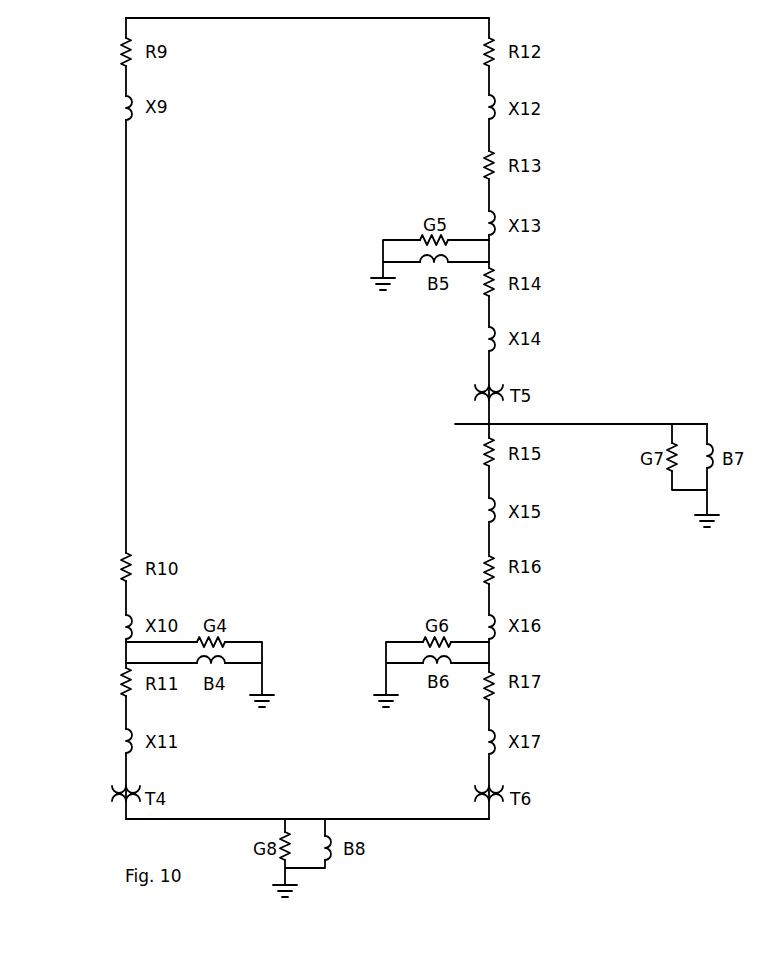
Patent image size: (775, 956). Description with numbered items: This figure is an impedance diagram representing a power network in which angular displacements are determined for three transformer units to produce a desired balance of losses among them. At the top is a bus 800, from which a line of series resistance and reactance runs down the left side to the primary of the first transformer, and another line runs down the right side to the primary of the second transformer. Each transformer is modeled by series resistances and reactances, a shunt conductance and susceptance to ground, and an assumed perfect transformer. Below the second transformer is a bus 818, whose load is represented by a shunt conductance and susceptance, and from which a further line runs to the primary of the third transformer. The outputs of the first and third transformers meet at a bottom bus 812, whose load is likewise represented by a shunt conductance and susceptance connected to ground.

The bus 800 is at (293, 23).
The bus 812 is at (407, 813).
The bus 818 is at (568, 428).